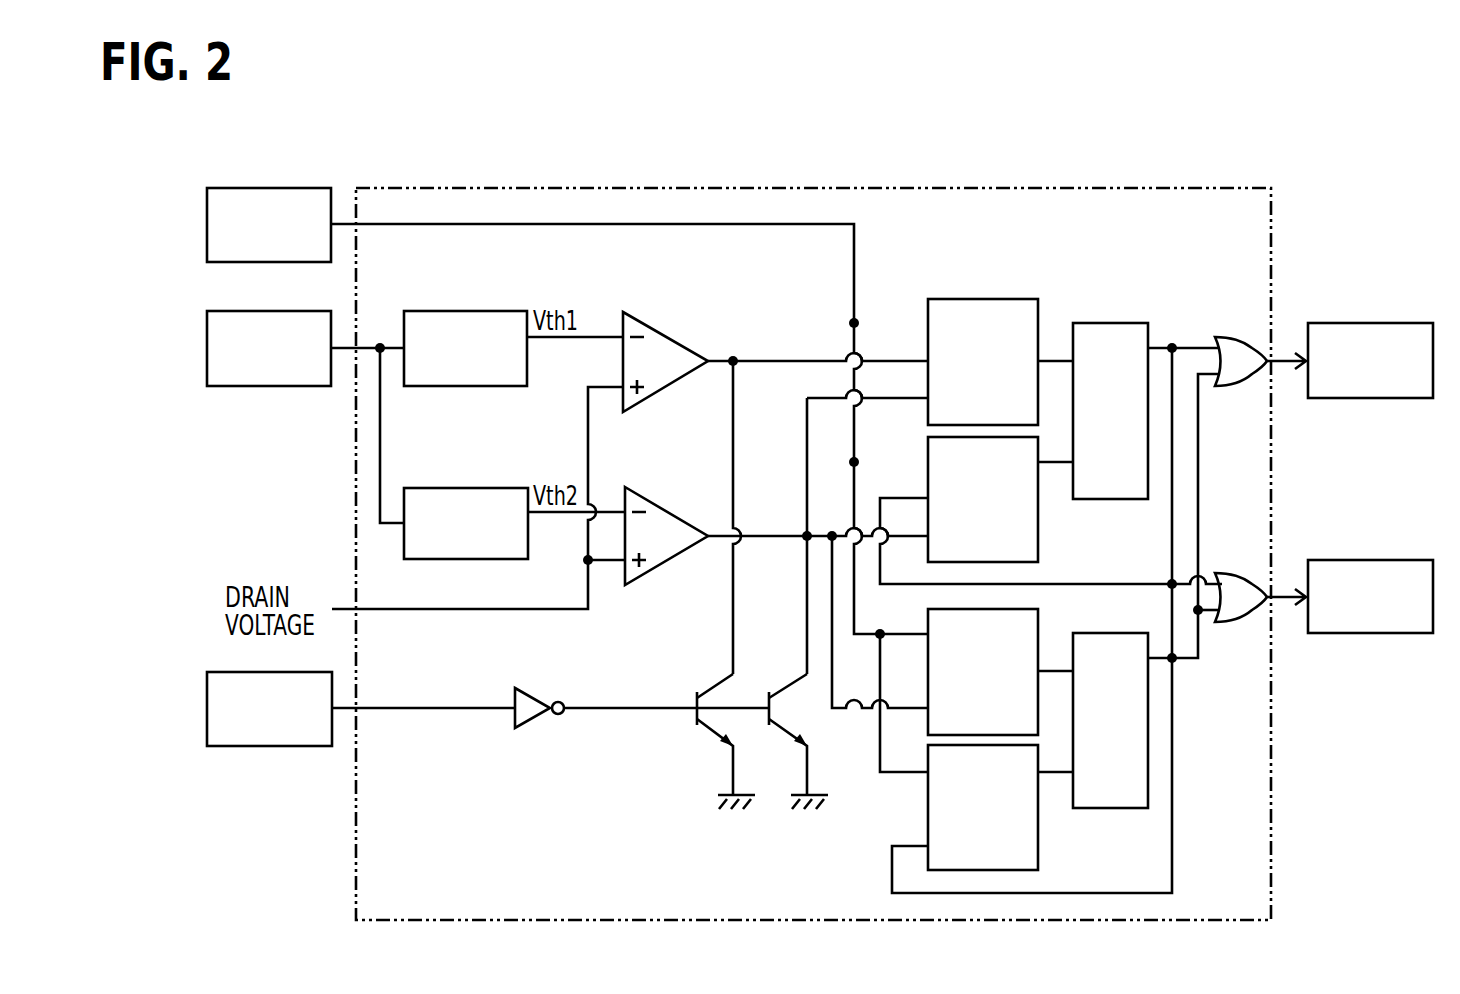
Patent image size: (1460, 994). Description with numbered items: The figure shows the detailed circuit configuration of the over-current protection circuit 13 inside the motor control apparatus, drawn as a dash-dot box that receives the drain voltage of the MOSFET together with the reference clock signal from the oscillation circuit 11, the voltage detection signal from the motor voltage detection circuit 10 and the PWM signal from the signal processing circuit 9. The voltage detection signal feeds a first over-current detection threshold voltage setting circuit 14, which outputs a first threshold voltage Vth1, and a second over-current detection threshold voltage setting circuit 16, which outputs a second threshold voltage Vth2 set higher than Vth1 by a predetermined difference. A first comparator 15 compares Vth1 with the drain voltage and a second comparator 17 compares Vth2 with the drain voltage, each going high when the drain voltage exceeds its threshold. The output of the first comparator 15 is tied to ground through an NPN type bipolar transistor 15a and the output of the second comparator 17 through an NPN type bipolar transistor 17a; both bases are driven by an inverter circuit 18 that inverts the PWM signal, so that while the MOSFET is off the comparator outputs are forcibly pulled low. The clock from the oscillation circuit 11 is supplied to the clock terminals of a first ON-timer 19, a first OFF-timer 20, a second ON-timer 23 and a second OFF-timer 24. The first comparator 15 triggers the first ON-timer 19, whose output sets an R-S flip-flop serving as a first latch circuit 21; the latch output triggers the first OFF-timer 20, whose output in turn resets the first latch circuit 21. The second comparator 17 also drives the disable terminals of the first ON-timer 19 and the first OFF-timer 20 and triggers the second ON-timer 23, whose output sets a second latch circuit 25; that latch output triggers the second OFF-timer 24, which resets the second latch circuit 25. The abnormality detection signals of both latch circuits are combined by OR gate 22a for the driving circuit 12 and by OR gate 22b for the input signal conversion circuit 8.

The input signal conversion circuit 8 is at (1370, 560).
The signal processing circuit 9 is at (282, 746).
The motor voltage detection circuit 10 is at (282, 311).
The oscillation circuit 11 is at (282, 188).
The driving circuit 12 is at (1370, 323).
The over-current protection circuit 13 is at (975, 188).
The first over-current detection threshold voltage setting circuit 14 is at (455, 311).
The first comparator 15 is at (659, 327).
The NPN type bipolar transistor 15a is at (710, 733).
The second over-current detection threshold voltage setting circuit 16 is at (453, 488).
The second comparator 17 is at (660, 501).
The NPN type bipolar transistor 17a is at (782, 733).
The inverter circuit 18 is at (540, 728).
The first ON-timer 19 is at (975, 299).
The first OFF-timer 20 is at (1038, 533).
The first latch circuit 21 is at (1100, 323).
The OR gate 22a is at (1238, 386).
The OR gate 22b is at (1238, 622).
The second ON-timer 23 is at (1020, 609).
The second OFF-timer 24 is at (1038, 842).
The second latch circuit 25 is at (1100, 633).